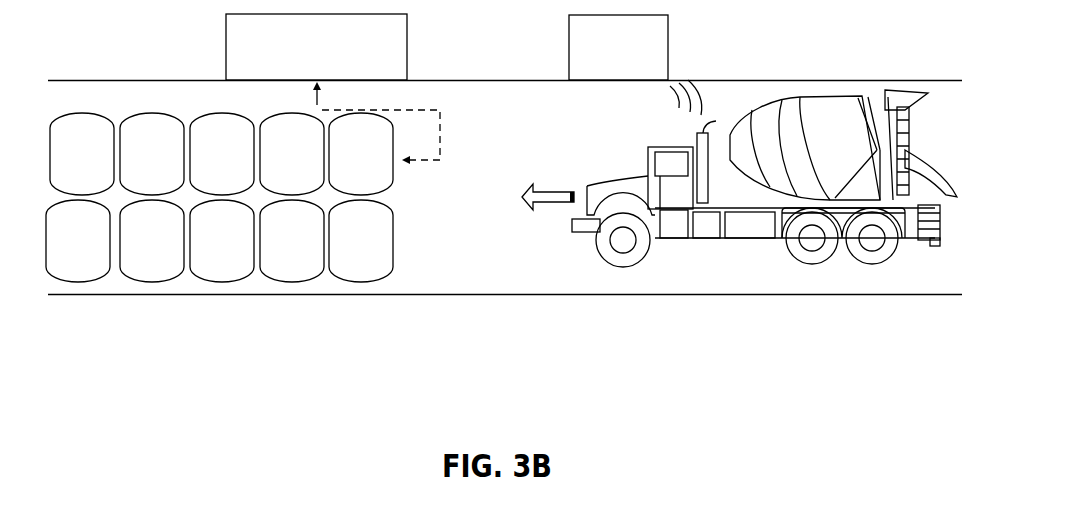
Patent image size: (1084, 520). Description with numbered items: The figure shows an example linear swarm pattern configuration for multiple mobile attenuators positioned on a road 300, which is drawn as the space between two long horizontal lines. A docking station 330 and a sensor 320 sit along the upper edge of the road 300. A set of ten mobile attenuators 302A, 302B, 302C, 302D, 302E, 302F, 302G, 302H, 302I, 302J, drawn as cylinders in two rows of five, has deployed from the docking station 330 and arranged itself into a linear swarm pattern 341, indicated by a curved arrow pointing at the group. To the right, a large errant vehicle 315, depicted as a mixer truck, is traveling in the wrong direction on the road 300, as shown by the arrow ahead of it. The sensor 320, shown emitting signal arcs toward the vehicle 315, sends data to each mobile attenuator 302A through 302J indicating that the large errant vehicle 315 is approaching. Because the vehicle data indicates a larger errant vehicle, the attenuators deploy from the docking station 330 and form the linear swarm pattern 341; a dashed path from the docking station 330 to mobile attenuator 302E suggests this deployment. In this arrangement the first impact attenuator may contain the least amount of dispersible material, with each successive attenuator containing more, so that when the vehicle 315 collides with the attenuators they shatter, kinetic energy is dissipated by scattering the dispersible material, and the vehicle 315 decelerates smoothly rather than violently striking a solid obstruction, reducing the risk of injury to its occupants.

The road 300 is at (475, 271).
The mobile attenuator 302A is at (105, 167).
The mobile attenuator 302B is at (175, 167).
The mobile attenuator 302C is at (245, 167).
The mobile attenuator 302D is at (315, 167).
The mobile attenuator 302E is at (384, 167).
The mobile attenuator 302F is at (101, 259).
The mobile attenuator 302G is at (175, 259).
The mobile attenuator 302H is at (245, 259).
The mobile attenuator 302I is at (311, 259).
The mobile attenuator 302J is at (380, 259).
The large errant vehicle 315 is at (855, 147).
The sensor 320 is at (634, 71).
The docking station 330 is at (333, 70).
The linear swarm pattern 341 is at (160, 101).